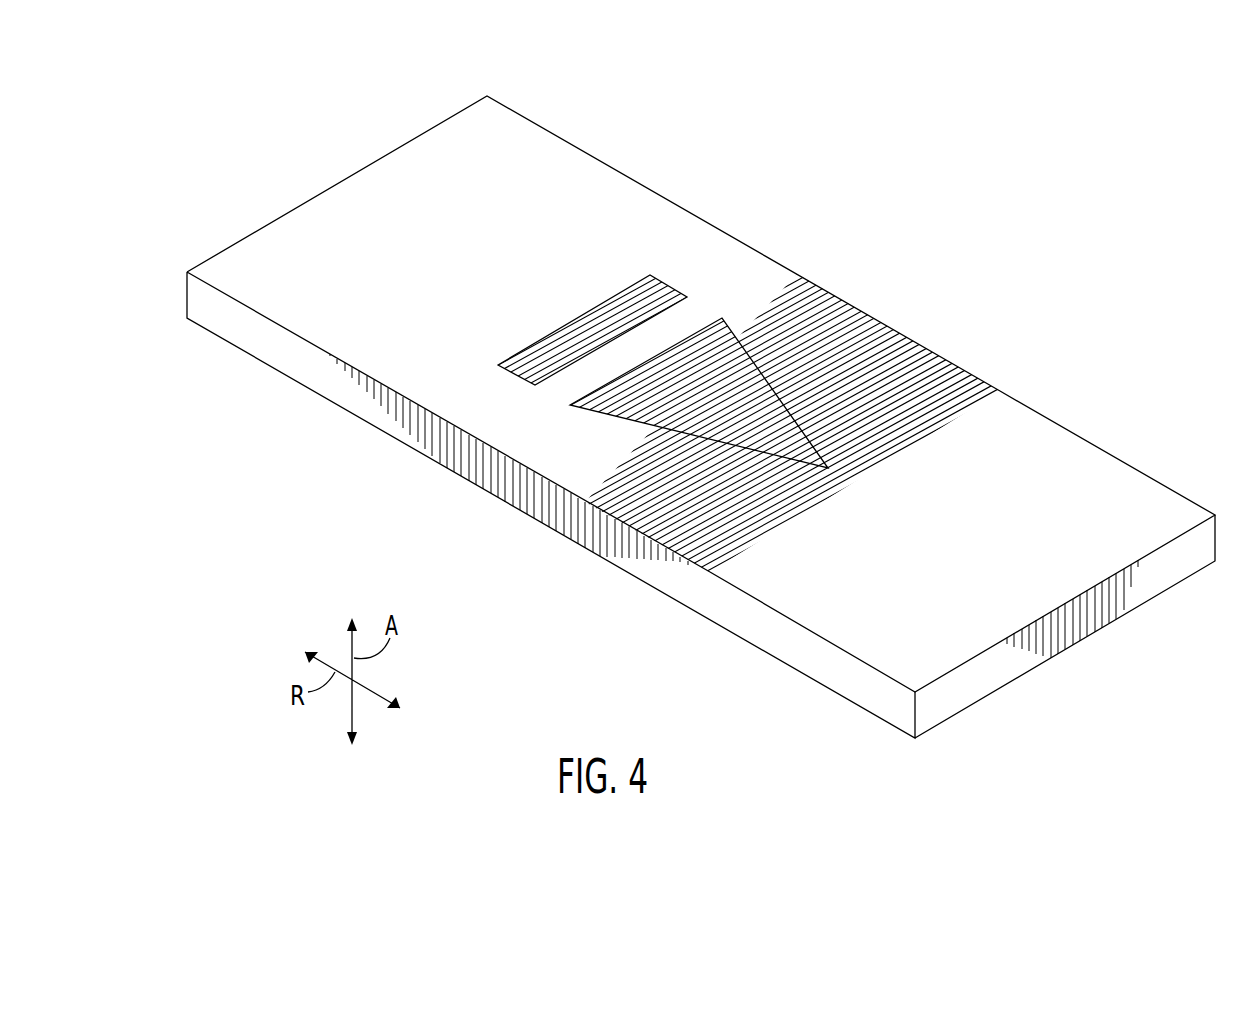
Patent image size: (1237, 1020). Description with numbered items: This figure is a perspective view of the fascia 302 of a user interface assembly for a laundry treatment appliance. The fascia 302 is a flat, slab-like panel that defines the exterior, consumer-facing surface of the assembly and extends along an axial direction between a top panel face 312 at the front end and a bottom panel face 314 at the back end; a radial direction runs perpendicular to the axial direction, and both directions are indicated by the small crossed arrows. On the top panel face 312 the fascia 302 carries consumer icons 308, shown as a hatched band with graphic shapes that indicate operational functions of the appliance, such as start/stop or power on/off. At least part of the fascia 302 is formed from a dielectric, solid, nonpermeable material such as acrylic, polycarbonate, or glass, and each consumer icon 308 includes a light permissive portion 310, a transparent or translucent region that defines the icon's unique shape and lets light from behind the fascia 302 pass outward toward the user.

The fascia 302 is at (538, 157).
The consumer icons 308 is at (748, 360).
The light permissive portion 310 is at (571, 407).
The top panel face 312 is at (982, 435).
The bottom panel face 314 is at (562, 546).